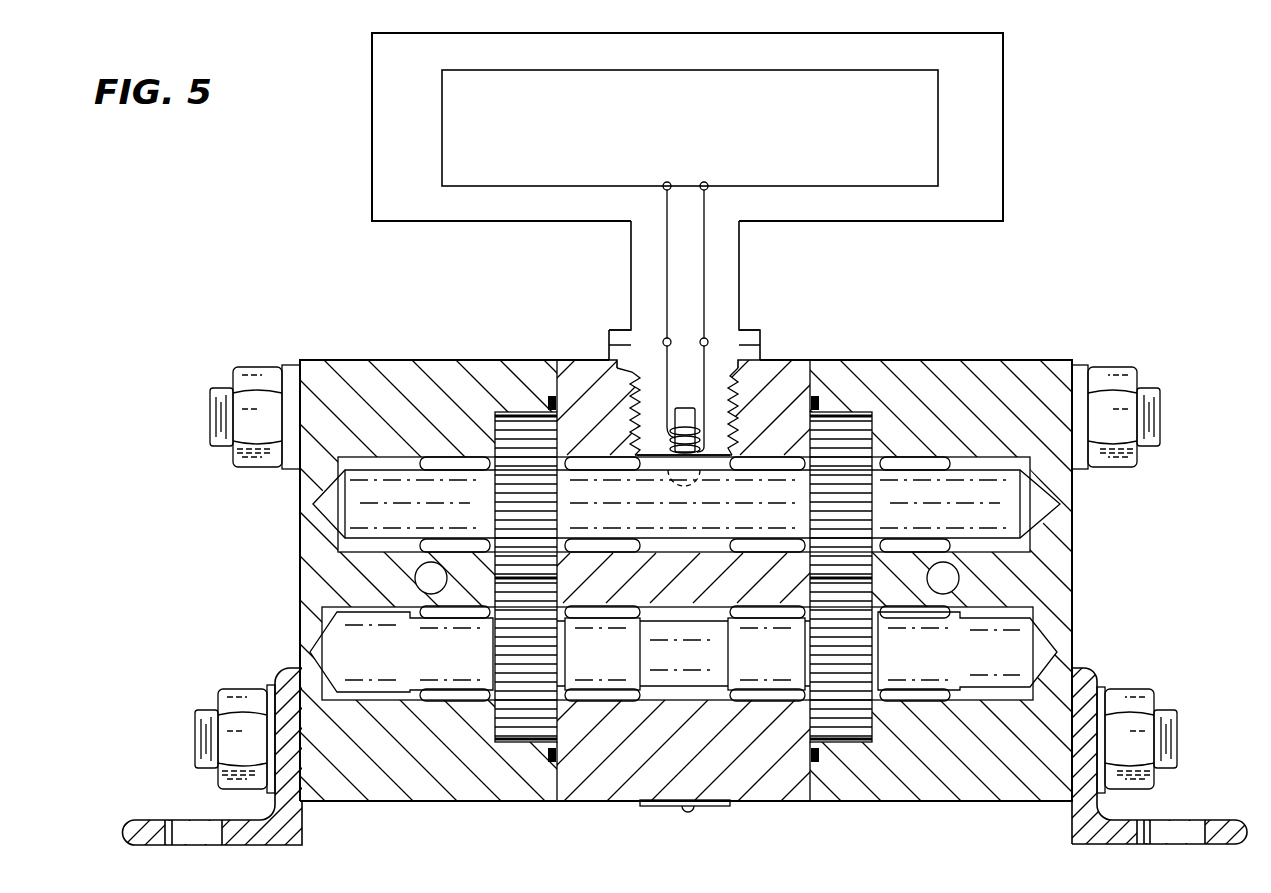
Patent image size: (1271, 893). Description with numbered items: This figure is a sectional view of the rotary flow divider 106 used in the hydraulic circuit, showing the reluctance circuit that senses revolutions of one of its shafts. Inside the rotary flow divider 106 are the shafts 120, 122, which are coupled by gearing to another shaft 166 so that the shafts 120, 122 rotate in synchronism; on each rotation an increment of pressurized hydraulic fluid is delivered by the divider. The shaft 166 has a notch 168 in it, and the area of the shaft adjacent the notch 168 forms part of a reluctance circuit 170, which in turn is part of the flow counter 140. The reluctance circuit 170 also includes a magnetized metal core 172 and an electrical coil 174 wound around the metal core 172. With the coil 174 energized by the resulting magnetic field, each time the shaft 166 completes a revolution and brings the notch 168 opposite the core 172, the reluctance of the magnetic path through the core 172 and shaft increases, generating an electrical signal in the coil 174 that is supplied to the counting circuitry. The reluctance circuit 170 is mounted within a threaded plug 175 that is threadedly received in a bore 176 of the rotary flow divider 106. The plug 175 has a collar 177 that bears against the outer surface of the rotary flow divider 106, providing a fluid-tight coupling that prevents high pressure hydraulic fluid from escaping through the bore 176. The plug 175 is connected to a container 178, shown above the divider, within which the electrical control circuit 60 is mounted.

The electrical control circuit 60 is at (695, 144).
The rotary flow divider 106 is at (970, 357).
The shaft 120 is at (626, 640).
The shaft 122 is at (947, 645).
The flow counter 140 is at (716, 418).
The shaft 166 is at (652, 501).
The notch 168 is at (643, 457).
The reluctance circuit 170 is at (684, 408).
The magnetized metal core 172 is at (713, 376).
The electrical coil 174 is at (690, 480).
The threaded plug 175 is at (637, 390).
The bore 176 is at (714, 442).
The collar 177 is at (758, 349).
The container 178 is at (1003, 136).